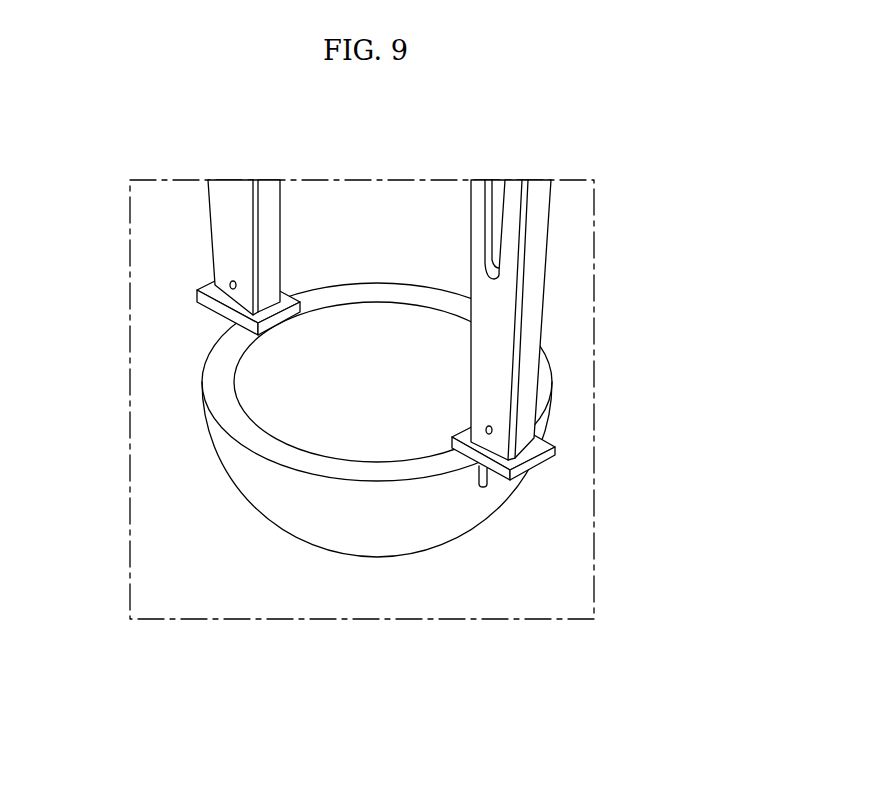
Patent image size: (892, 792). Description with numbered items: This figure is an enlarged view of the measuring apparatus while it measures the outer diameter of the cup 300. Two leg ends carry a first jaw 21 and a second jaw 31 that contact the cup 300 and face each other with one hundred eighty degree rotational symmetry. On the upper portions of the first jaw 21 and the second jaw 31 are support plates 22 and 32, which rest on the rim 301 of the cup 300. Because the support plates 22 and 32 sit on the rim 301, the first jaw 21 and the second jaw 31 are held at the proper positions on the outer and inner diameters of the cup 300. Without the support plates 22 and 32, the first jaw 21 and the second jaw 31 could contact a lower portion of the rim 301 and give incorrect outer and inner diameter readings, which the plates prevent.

The first jaw 21 is at (230, 324).
The support plate 22 is at (195, 298).
The second jaw 31 is at (493, 480).
The support plate 32 is at (537, 468).
The cup 300 is at (255, 538).
The rim 301 is at (232, 422).